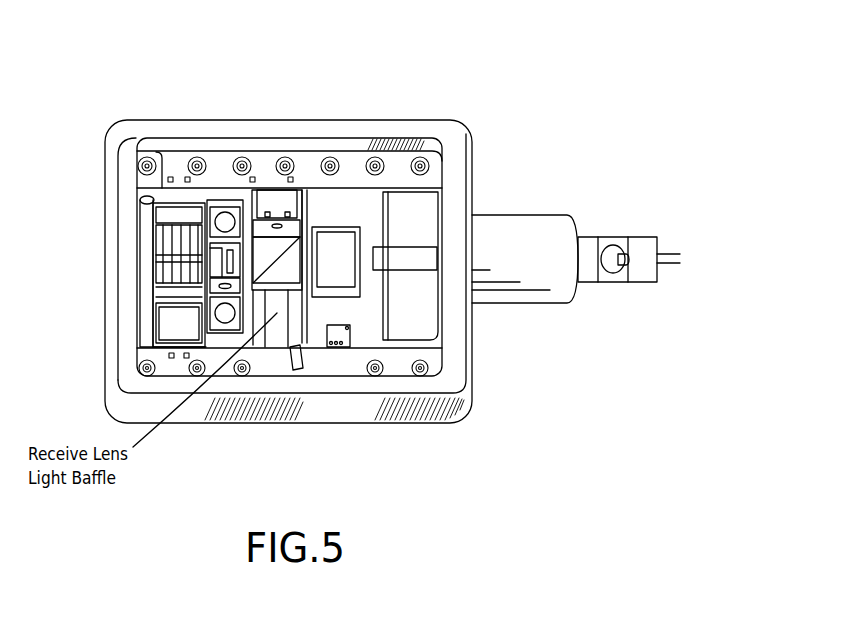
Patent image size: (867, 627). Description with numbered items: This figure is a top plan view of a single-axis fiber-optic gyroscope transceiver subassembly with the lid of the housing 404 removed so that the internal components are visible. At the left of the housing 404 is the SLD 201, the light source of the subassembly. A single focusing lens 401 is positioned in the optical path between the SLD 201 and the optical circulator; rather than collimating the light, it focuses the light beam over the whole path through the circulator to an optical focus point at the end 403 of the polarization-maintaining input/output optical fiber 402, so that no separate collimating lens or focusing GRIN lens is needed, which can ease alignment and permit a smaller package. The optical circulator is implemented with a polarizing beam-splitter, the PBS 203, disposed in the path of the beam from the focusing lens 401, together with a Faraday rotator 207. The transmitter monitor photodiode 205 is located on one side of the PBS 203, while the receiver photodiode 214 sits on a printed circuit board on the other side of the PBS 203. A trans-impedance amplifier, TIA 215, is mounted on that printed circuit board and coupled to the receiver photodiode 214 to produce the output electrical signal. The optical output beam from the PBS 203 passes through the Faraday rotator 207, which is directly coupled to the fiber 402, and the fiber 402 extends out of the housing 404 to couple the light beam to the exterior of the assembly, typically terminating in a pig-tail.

The SLD 201 is at (153, 264).
The PBS 203 is at (276, 262).
The transmitter monitor photodiode 205 is at (280, 360).
The Faraday rotator 207 is at (340, 257).
The receiver photodiode 214 is at (277, 200).
The trans-impedance amplifier (TIA) 215 is at (350, 343).
The focusing lens 401 is at (215, 243).
The input/output optical fiber 402 is at (413, 258).
The end of the optical fiber 403 is at (372, 262).
The housing 404 is at (403, 120).